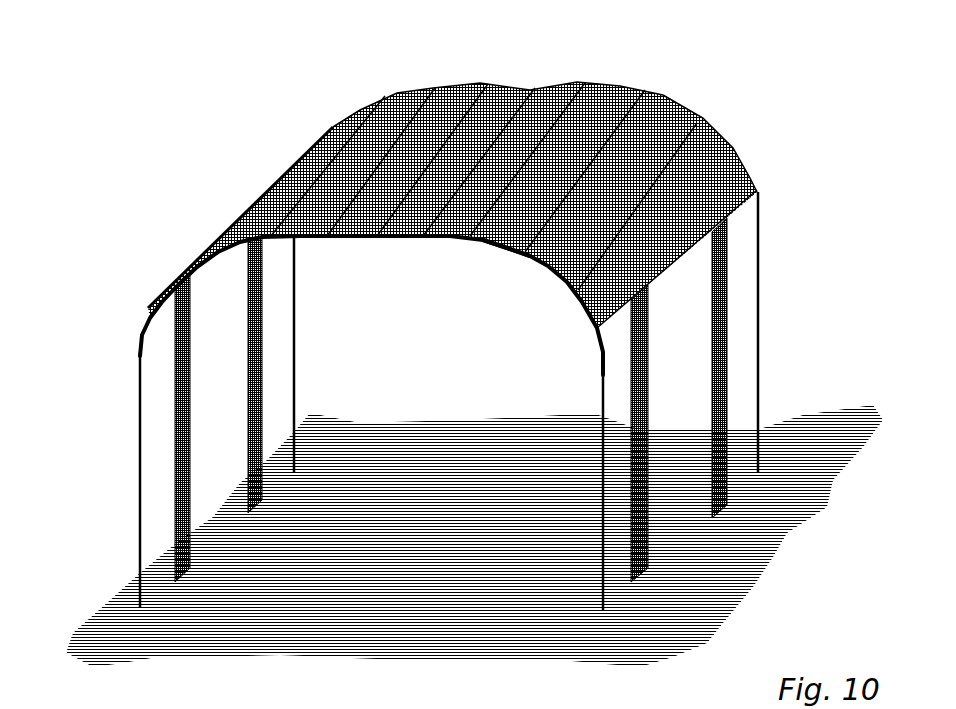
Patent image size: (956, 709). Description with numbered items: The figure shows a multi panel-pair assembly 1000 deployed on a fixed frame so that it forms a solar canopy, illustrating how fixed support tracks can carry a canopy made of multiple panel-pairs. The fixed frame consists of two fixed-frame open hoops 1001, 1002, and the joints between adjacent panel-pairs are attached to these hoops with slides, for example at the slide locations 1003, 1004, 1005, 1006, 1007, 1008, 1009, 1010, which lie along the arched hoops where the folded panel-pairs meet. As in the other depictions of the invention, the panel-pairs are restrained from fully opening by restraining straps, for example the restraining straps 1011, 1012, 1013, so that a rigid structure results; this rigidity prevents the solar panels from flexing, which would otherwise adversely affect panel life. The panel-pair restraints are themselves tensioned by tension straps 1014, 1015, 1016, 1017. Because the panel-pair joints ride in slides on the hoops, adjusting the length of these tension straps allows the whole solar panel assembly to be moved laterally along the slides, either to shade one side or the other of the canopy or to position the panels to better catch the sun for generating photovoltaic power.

The multi panel-pair assembly 1000 is at (173, 123).
The fixed-frame open hoop 1001 is at (130, 426).
The fixed-frame open hoop 1002 is at (767, 306).
The slide location 1003 is at (590, 337).
The slide location 1004 is at (762, 188).
The slide location 1005 is at (537, 270).
The slide location 1006 is at (710, 112).
The slide location 1007 is at (457, 250).
The slide location 1008 is at (622, 87).
The slide location 1009 is at (373, 247).
The slide location 1010 is at (537, 80).
The restraining strap 1011 is at (567, 305).
The restraining strap 1012 is at (503, 258).
The restraining strap 1013 is at (417, 247).
The tension strap 1014 is at (700, 265).
The tension strap 1015 is at (787, 545).
The tension strap 1016 is at (237, 287).
The tension strap 1017 is at (168, 462).